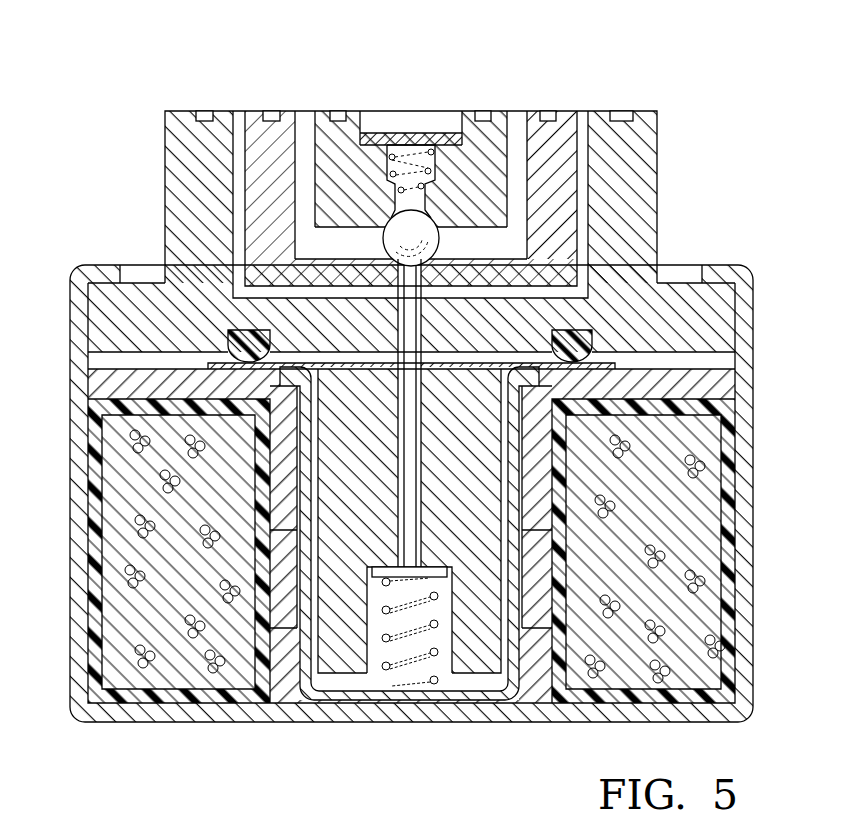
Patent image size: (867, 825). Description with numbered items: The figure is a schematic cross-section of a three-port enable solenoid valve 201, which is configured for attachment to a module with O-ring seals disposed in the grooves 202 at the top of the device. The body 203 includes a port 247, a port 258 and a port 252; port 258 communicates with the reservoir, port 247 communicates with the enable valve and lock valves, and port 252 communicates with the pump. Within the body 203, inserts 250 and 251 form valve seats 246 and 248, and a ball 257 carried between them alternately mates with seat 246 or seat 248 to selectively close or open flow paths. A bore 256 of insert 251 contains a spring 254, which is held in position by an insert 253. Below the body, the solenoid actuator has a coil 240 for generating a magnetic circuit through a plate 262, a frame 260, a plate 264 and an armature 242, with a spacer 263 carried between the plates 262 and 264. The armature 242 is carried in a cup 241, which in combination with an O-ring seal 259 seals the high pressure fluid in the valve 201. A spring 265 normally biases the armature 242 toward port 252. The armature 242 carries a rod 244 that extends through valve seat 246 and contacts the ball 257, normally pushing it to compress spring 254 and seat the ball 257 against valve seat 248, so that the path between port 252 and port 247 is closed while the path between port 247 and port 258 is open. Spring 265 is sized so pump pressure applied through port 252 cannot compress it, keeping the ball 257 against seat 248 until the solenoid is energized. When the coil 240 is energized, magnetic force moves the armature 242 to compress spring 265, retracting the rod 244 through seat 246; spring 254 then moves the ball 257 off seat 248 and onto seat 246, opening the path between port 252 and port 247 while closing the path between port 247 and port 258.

The enable solenoid valve 201 is at (170, 745).
The grooves 202 is at (613, 116).
The body 203 is at (652, 215).
The coil 240 is at (705, 570).
The cup 241 is at (612, 364).
The armature 242 is at (340, 648).
The rod 244 is at (410, 442).
The valve seat 246 is at (391, 262).
The port 247 is at (304, 111).
The valve seat 248 is at (390, 219).
The insert 250 is at (284, 109).
The insert 251 is at (322, 102).
The port 252 is at (362, 117).
The insert 253 is at (436, 137).
The spring 254 is at (393, 163).
The bore 256 is at (425, 160).
The ball 257 is at (422, 224).
The port 258 is at (584, 157).
The O-ring seal 259 is at (578, 332).
The frame 260 is at (750, 662).
The plate 262 is at (702, 383).
The spacer 263 is at (538, 556).
The plate 264 is at (536, 683).
The spring 265 is at (408, 662).